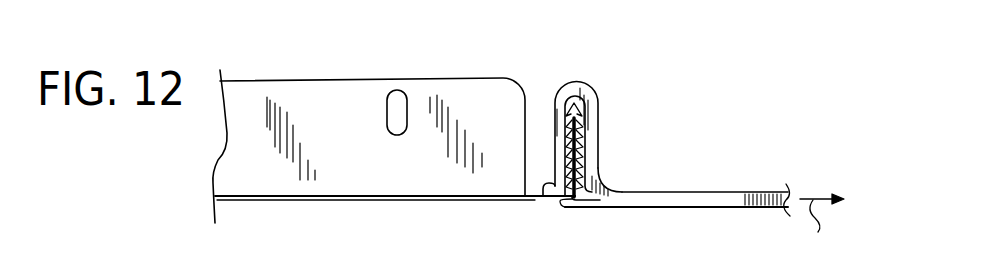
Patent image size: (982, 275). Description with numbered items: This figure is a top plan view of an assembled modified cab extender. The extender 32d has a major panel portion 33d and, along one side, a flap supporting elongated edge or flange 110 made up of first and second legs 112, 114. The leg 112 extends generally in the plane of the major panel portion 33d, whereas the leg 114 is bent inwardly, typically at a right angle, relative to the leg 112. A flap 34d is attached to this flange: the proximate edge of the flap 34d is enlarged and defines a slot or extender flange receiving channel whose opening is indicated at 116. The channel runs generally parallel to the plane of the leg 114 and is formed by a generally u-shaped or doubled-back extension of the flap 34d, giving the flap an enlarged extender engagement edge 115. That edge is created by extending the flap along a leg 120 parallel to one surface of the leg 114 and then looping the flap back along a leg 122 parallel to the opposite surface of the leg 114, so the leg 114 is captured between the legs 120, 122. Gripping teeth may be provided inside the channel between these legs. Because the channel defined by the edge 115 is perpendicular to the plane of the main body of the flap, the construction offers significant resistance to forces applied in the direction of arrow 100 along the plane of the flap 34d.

The extender 32d is at (470, 97).
The major panel portion 33d is at (335, 202).
The flap 34d is at (723, 181).
The arrow 100 is at (821, 229).
The flap supporting elongated edge or flange 110 is at (581, 148).
The first leg 112 is at (540, 205).
The second leg 114 is at (578, 98).
The extender engagement edge 115 is at (589, 81).
The opening 116 is at (562, 204).
The leg 120 is at (597, 160).
The leg 122 is at (553, 107).